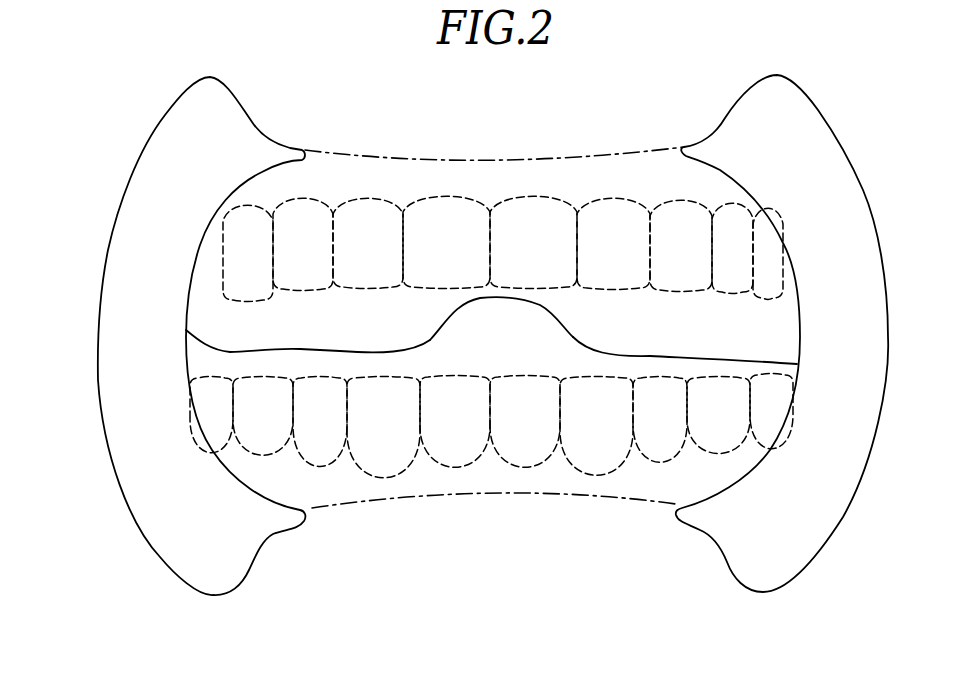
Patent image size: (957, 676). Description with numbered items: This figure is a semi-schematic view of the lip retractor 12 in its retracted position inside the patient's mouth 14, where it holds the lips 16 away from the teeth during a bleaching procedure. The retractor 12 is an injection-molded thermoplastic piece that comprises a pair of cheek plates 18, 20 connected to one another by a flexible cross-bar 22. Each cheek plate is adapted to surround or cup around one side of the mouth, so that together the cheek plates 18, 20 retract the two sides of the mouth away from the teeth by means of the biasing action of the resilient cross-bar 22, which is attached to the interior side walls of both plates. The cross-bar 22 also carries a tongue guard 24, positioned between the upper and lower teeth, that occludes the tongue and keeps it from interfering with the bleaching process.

The lip retractor 12 is at (120, 310).
The patient's mouth 14 is at (580, 183).
The lips 16 is at (413, 160).
The cheek plate 18 is at (849, 249).
The cheek plate 20 is at (203, 187).
The flexible cross-bar 22 is at (520, 350).
The tongue guard 24 is at (538, 327).